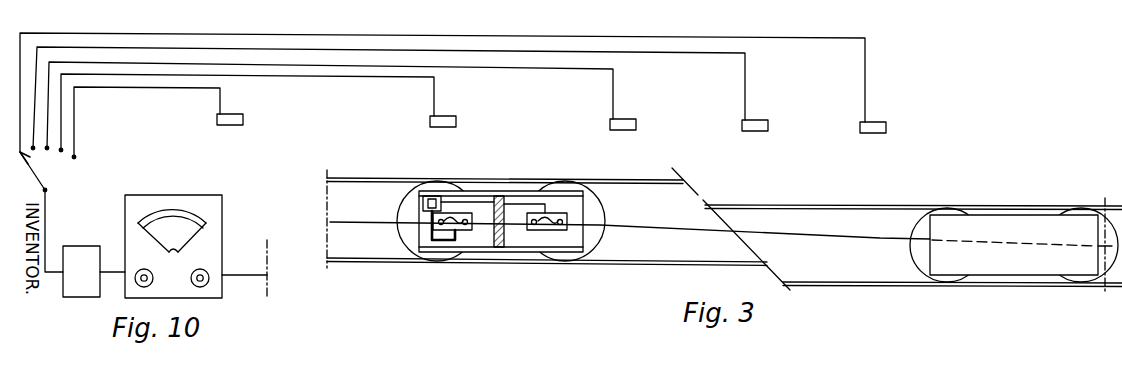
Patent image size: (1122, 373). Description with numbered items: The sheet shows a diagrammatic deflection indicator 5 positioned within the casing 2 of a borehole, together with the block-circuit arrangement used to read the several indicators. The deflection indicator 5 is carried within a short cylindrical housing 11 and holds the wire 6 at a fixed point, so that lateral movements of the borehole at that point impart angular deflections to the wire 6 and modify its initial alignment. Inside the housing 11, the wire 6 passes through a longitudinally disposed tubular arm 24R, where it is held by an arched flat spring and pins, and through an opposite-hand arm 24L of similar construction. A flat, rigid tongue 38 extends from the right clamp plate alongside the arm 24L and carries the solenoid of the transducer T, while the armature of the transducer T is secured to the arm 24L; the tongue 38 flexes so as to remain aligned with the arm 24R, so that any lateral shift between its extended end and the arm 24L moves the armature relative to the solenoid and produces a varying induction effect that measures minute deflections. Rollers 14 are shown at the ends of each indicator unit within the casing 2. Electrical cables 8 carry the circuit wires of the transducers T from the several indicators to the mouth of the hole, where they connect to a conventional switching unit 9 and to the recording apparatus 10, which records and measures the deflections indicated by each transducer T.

In FIG. 3, the casing 2 is at (620, 182).
In FIG. 10, the deflection indicator 5 is at (232, 115).
In FIG. 3, the deflection indicator 5 is at (468, 191).
In FIG. 3, the wire 6 is at (363, 221).
In FIG. 10, the electrical cables 8 is at (302, 65).
In FIG. 10, the switching unit 9 is at (40, 174).
In FIG. 10, the recording apparatus 10 is at (211, 194).
In FIG. 3, the cylindrical housing 11 is at (543, 189).
In FIG. 3, the rollers 14 is at (432, 186).
In FIG. 3, the arm 24L is at (458, 229).
In FIG. 3, the tubular arm 24R is at (553, 231).
In FIG. 3, the tongue 38 is at (510, 196).
In FIG. 3, the transducer T is at (418, 200).